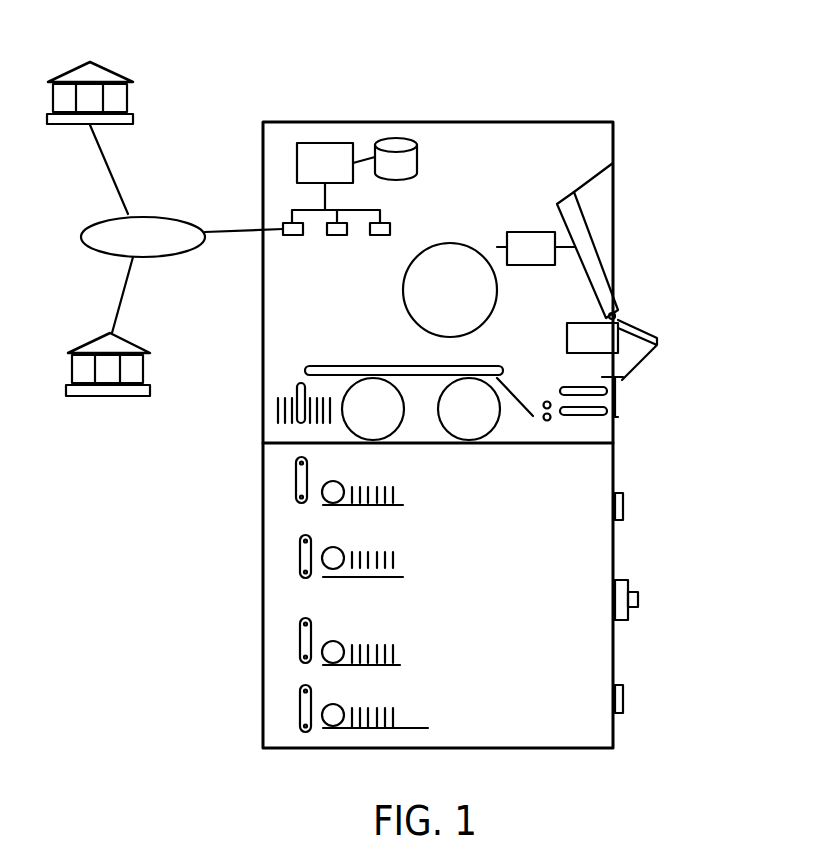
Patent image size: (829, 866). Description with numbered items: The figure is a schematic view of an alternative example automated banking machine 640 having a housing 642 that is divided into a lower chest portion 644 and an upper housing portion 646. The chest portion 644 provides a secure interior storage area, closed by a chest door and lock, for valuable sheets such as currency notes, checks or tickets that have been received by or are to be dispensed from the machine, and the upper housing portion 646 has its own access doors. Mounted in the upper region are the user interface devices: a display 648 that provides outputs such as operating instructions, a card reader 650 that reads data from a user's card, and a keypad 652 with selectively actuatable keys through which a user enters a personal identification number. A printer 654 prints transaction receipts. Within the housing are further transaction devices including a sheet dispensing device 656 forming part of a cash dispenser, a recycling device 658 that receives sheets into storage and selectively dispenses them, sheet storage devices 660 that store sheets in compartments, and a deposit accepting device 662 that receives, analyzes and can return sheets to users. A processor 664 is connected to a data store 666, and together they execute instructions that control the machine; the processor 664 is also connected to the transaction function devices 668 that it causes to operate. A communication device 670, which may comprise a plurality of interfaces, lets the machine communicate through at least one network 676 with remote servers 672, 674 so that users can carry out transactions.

The automated banking machine 640 is at (660, 117).
The housing 642 is at (615, 658).
The chest portion 644 is at (262, 512).
The upper housing portion 646 is at (262, 363).
The display 648 is at (595, 232).
The card reader 650 is at (622, 310).
The keypad 652 is at (633, 327).
The printer 654 is at (522, 232).
The sheet dispensing device 656 is at (403, 498).
The recycling device 658 is at (403, 568).
The sheet storage devices 660 is at (278, 410).
The deposit accepting device 662 is at (595, 433).
The processor 664 is at (322, 143).
The data store 666 is at (397, 138).
The transaction function devices 668 is at (321, 255).
The communication device 670 is at (293, 238).
The remote server 672 is at (127, 92).
The remote server 674 is at (143, 348).
The network 676 is at (150, 215).